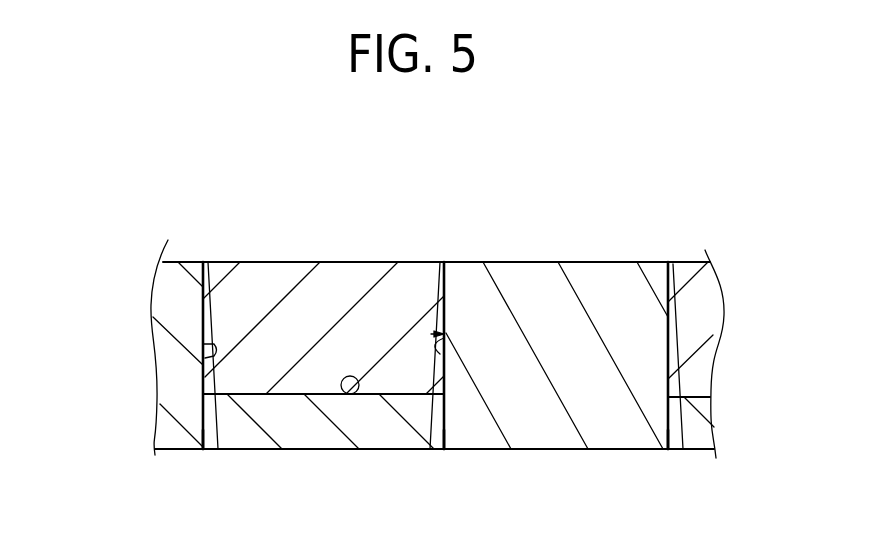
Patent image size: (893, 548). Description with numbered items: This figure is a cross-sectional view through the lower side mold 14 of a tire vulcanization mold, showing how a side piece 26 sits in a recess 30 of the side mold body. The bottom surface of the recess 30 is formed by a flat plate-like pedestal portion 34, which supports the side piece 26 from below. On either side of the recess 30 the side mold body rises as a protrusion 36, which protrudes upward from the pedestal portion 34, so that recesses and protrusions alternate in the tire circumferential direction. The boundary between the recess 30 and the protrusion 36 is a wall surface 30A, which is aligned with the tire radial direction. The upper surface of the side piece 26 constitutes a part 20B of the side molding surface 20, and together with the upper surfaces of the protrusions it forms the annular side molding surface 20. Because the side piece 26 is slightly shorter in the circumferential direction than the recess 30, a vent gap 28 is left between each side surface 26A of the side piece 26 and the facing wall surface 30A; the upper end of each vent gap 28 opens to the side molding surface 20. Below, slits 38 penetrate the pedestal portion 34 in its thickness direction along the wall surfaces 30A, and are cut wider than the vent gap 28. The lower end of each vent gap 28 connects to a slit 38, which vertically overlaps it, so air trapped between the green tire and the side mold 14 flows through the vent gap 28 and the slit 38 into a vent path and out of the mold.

The side mold 14 is at (433, 184).
The side molding surface 20 is at (605, 262).
The part of the side molding surface 20B is at (347, 262).
The side piece 26 is at (280, 272).
The side surface of the side piece 26A is at (205, 298).
The vent gap 28 is at (194, 262).
The recess 30 is at (362, 397).
The wall surface of the recess 30A is at (201, 366).
The pedestal portion 34 is at (305, 440).
The protrusion 36 is at (543, 273).
The slit 38 is at (210, 440).